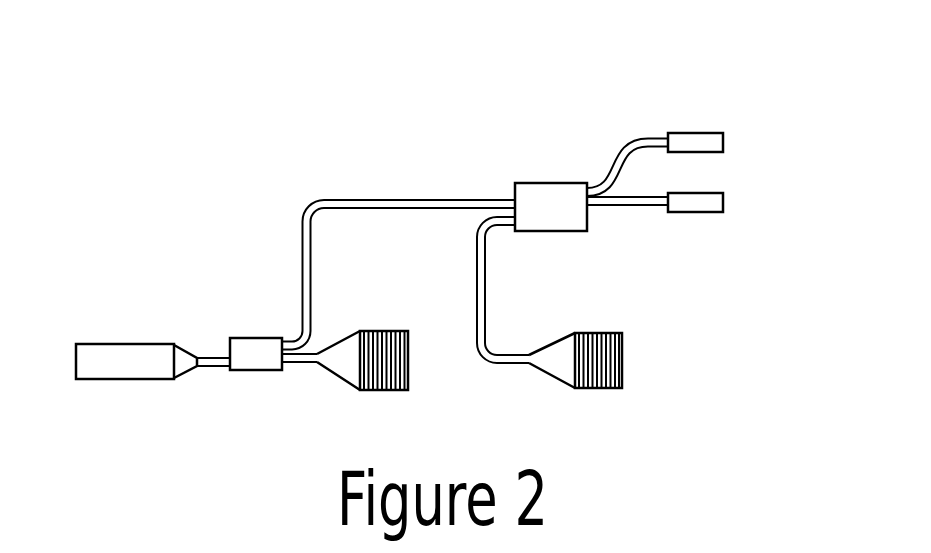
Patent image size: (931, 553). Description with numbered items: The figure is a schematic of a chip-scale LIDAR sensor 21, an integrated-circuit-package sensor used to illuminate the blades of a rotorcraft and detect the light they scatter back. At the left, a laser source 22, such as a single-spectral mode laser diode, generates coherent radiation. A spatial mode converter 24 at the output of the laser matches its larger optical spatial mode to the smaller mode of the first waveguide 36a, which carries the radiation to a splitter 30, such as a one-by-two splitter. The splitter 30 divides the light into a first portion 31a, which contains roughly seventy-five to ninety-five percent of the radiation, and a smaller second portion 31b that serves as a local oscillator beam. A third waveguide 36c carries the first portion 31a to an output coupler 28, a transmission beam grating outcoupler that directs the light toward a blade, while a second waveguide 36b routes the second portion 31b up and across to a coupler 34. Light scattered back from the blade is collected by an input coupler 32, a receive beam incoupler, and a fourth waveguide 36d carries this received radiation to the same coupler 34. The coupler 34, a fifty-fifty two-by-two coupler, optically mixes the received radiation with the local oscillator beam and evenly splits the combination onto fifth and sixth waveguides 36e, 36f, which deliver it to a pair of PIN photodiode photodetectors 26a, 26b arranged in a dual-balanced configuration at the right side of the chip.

The chip-scale LIDAR sensor 21 is at (394, 150).
The laser source 22 is at (128, 380).
The spatial mode converter 24 is at (188, 370).
The photodetector 26a is at (723, 202).
The photodetector 26b is at (723, 141).
The output coupler 28 is at (390, 390).
The splitter 30 is at (253, 333).
The first portion 31a is at (304, 368).
The second portion 31b is at (318, 202).
The input coupler 32 is at (589, 333).
The coupler 34 is at (556, 195).
The first waveguide 36a is at (215, 355).
The second waveguide 36b is at (388, 210).
The third waveguide 36c is at (289, 371).
The fourth waveguide 36d is at (522, 287).
The fifth waveguide 36e is at (643, 206).
The sixth waveguide 36f is at (645, 138).